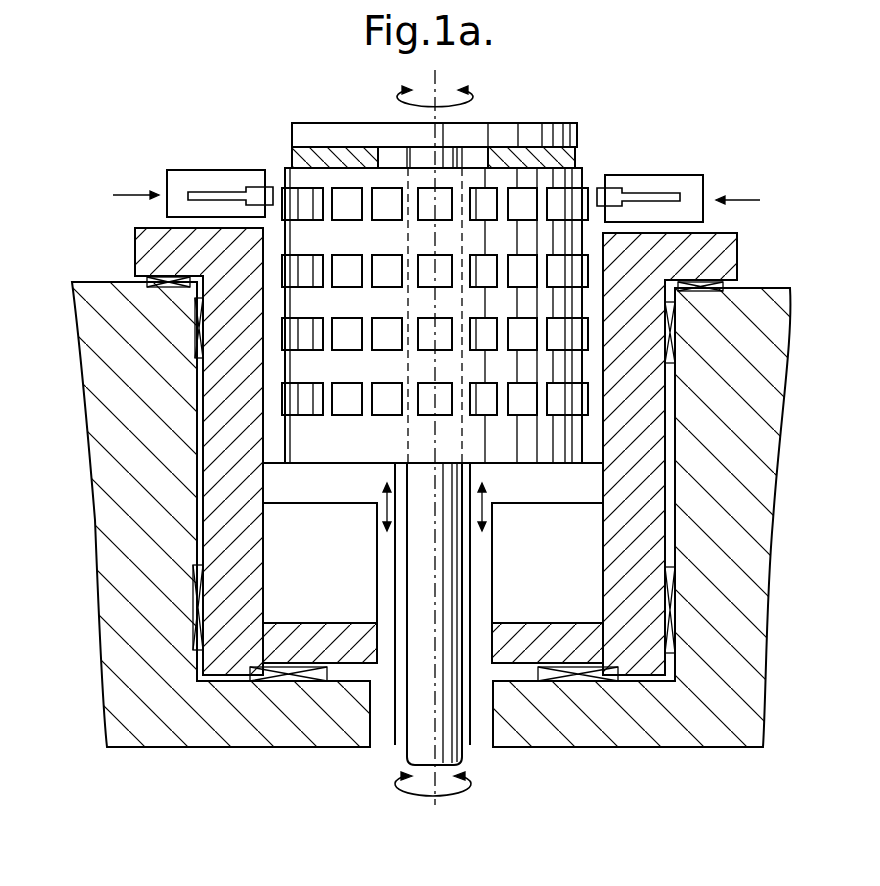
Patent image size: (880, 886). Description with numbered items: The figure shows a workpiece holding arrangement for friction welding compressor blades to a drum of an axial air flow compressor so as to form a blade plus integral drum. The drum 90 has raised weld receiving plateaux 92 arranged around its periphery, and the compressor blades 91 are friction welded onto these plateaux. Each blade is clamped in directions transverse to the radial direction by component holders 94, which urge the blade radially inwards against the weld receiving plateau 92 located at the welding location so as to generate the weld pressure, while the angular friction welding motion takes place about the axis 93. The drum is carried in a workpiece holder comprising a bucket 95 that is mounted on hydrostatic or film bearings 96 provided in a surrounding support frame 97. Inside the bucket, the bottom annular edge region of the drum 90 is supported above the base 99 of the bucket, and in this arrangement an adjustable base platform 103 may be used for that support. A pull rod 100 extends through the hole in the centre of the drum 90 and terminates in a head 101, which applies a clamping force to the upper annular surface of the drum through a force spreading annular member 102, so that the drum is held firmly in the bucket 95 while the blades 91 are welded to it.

The drum 90 is at (470, 372).
The compressor blades 91 is at (200, 195).
The weld receiving plateaux 92 is at (290, 174).
The axis 93 is at (445, 78).
The component holders 94 is at (223, 180).
The bucket 95 is at (222, 550).
The hydrostatic or film bearings 96 is at (199, 300).
The support frame 97 is at (733, 577).
The base 99 is at (518, 657).
The pull rod 100 is at (423, 748).
The head 101 is at (530, 133).
The force spreading annular member 102 is at (292, 158).
The adjustable base platform 103 is at (325, 485).